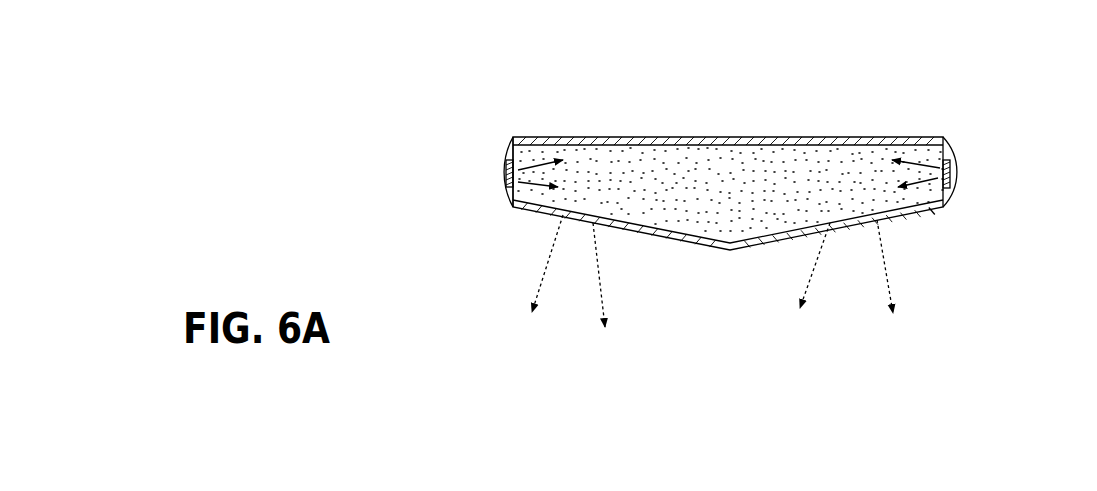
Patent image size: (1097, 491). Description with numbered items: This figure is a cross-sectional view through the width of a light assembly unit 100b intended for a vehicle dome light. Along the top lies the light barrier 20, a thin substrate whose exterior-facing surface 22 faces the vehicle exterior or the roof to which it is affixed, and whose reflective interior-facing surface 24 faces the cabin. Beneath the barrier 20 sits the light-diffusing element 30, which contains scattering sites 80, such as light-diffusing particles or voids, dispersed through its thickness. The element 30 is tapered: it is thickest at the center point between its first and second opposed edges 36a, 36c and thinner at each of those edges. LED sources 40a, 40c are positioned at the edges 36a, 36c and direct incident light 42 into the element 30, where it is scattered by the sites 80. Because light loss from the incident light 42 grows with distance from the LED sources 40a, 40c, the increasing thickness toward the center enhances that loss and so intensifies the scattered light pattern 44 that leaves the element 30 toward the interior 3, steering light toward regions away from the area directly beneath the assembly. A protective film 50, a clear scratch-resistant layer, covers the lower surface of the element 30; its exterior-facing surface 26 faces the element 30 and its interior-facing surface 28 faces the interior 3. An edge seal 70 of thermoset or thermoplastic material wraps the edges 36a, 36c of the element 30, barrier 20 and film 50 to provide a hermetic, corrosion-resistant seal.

The light assembly unit 100b is at (851, 78).
The light barrier 20 is at (932, 147).
The exterior-facing surface 22 is at (771, 135).
The interior-facing surface 24 is at (668, 150).
The exterior-facing surface 26 is at (703, 226).
The interior-facing surface 28 is at (697, 252).
The light-diffusing element 30 is at (905, 150).
The first edge 36a is at (952, 150).
The second edge 36c is at (511, 139).
The LED source 40a is at (953, 168).
The LED source 40c is at (507, 176).
The incident light 42 is at (547, 150).
The scattered light pattern 44 is at (553, 247).
The protective film 50 is at (937, 213).
The edge seal 70 is at (503, 150).
The scattering sites 80 is at (645, 172).
The interior 3 is at (832, 292).